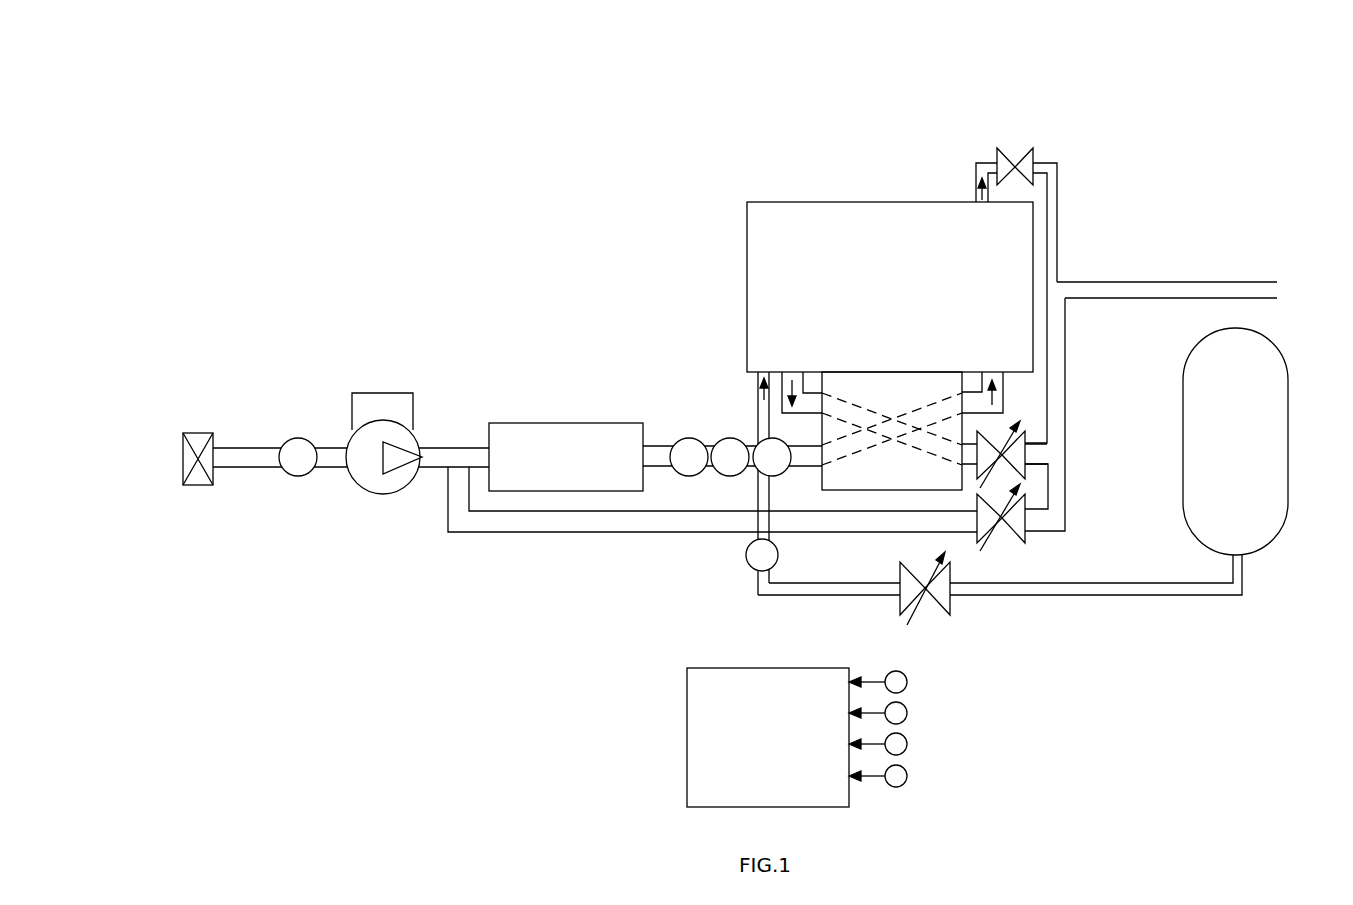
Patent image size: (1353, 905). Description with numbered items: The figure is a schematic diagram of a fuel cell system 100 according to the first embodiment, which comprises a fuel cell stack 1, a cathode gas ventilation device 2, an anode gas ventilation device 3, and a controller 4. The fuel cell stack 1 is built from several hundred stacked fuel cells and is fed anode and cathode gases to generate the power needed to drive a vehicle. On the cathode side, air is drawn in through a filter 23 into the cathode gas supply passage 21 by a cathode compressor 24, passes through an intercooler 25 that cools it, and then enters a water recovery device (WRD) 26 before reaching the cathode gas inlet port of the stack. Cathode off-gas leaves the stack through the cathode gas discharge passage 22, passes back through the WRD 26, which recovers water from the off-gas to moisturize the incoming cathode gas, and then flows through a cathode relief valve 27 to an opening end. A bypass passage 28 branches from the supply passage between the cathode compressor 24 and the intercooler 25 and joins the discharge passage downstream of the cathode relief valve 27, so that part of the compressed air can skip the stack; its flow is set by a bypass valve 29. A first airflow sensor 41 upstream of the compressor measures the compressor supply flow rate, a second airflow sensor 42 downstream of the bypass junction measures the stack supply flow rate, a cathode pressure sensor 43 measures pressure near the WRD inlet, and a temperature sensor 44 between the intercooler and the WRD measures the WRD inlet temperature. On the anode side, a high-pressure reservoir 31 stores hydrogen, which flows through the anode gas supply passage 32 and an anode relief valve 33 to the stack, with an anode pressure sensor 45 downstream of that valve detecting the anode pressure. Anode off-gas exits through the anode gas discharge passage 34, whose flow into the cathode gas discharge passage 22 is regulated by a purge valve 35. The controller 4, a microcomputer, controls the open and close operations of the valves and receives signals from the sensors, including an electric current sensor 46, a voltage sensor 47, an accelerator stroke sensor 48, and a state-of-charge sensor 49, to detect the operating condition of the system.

The fuel cell system 100 is at (334, 198).
The fuel cell stack 1 is at (866, 202).
The cathode gas ventilation device 2 is at (312, 358).
The anode gas ventilation device 3 is at (1167, 612).
The controller 4 is at (687, 708).
The cathode gas supply passage 21 is at (255, 447).
The cathode gas discharge passage 22 is at (804, 414).
The filter 23 is at (200, 487).
The cathode compressor 24 is at (383, 495).
The intercooler 25 is at (576, 422).
The water recovery device (WRD) 26 is at (822, 488).
The cathode relief valve 27 is at (1030, 470).
The bypass passage 28 is at (678, 534).
The bypass valve 29 is at (1030, 535).
The high-pressure reservoir 31 is at (1290, 355).
The anode gas supply passage 32 is at (1075, 595).
The anode relief valve 33 is at (955, 605).
The anode gas discharge passage 34 is at (1060, 190).
The purge valve 35 is at (1036, 152).
The first airflow sensor 41 is at (298, 477).
The second airflow sensor 42 is at (772, 436).
The cathode pressure sensor 43 is at (725, 438).
The temperature sensor 44 is at (685, 437).
The anode pressure sensor 45 is at (778, 555).
The electric current sensor 46 is at (907, 682).
The voltage sensor 47 is at (907, 713).
The accelerator stroke sensor 48 is at (907, 744).
The state-of-charge (SOC) sensor 49 is at (907, 776).